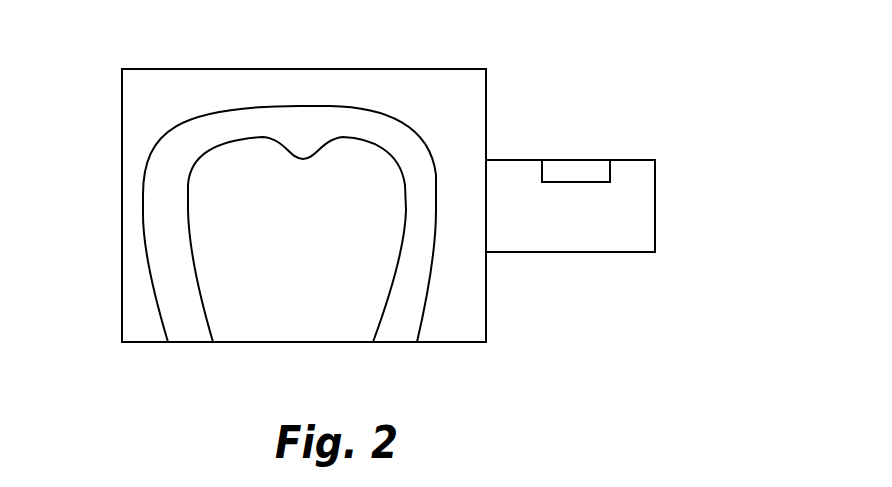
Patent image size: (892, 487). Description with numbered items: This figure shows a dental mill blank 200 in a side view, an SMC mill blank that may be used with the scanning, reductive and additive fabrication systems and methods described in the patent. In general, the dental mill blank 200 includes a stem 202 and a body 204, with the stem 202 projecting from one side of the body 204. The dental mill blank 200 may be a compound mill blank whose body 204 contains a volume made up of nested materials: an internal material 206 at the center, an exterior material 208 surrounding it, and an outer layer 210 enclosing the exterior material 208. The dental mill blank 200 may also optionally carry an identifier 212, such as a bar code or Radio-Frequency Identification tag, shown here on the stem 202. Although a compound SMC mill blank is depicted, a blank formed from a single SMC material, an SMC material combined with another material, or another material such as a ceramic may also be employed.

The dental mill blank 200 is at (553, 70).
The stem 202 is at (555, 252).
The body 204 is at (373, 353).
The internal material 206 is at (338, 232).
The exterior material 208 is at (143, 201).
The outer layer 210 is at (122, 140).
The identifier 212 is at (583, 158).